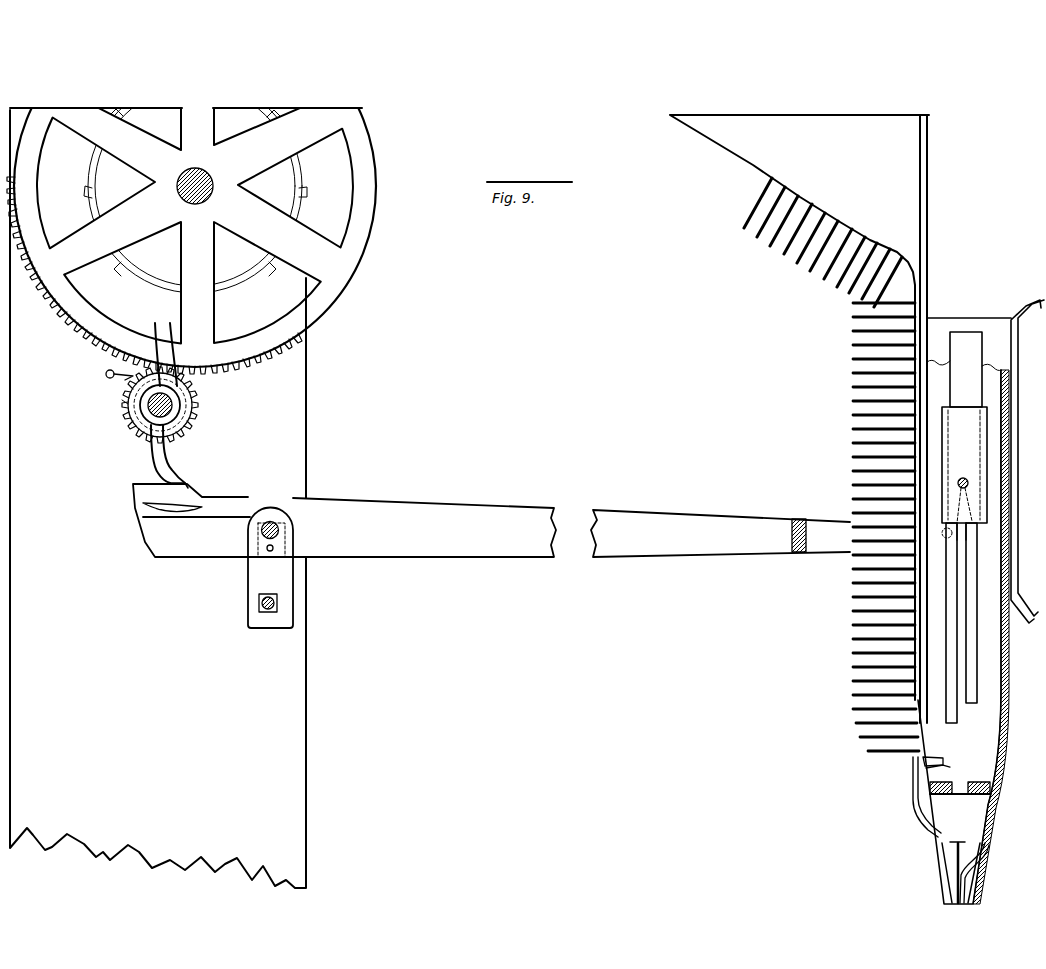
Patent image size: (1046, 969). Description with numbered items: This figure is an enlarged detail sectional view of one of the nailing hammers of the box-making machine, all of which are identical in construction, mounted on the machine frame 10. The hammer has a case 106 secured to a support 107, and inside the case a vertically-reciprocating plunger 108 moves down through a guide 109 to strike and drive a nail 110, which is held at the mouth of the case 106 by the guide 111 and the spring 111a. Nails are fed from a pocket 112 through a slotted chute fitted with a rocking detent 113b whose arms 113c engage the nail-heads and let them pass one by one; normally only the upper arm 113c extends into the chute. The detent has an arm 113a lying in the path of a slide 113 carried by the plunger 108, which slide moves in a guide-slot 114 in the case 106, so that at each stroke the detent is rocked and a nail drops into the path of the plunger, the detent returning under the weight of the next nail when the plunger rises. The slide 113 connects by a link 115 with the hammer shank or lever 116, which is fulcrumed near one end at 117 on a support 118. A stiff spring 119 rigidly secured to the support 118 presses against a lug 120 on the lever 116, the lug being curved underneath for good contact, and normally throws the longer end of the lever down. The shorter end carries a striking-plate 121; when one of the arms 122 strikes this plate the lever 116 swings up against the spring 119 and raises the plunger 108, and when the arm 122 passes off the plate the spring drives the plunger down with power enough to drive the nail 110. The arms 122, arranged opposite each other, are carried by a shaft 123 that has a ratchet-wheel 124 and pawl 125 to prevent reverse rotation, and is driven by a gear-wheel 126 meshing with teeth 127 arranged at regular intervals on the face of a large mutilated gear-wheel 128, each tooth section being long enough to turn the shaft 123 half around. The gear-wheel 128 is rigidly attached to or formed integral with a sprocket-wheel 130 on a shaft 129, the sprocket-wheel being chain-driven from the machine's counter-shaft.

The frame 10 is at (300, 712).
The case 106 is at (983, 689).
The support 107 is at (1012, 583).
The plunger 108 is at (958, 658).
The guide 109 is at (963, 788).
The nail 110 is at (853, 692).
The guide 111 is at (943, 850).
The spring 111a is at (969, 868).
The pocket 112 is at (799, 433).
The slide 113 is at (964, 472).
The detent arm 113a is at (935, 773).
The detent 113b is at (928, 758).
The detent arms 113c is at (932, 728).
The guide-slot 114 is at (966, 369).
The link 115 is at (970, 535).
The hammer lever 116 is at (719, 548).
The fulcrum 117 is at (277, 525).
The support 118 is at (253, 587).
The spring 119 is at (220, 515).
The lug 120 is at (188, 490).
The striking-plate 121 is at (176, 483).
The arms 122 is at (148, 403).
The shaft 123 is at (150, 408).
The ratchet-wheel 124 is at (200, 407).
The pawl 125 is at (118, 370).
The gear-wheel 126 is at (118, 405).
The teeth 127 is at (283, 353).
The mutilated gear-wheel 128 is at (201, 186).
The shaft 129 is at (198, 204).
The sprocket-wheel 130 is at (137, 278).